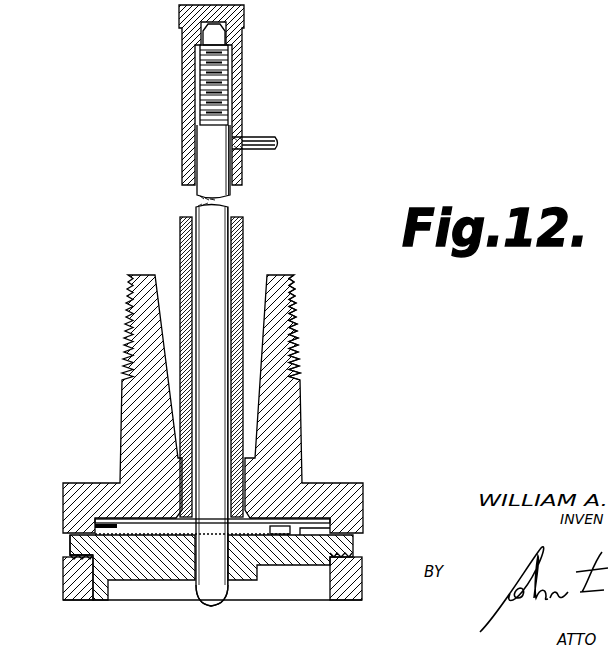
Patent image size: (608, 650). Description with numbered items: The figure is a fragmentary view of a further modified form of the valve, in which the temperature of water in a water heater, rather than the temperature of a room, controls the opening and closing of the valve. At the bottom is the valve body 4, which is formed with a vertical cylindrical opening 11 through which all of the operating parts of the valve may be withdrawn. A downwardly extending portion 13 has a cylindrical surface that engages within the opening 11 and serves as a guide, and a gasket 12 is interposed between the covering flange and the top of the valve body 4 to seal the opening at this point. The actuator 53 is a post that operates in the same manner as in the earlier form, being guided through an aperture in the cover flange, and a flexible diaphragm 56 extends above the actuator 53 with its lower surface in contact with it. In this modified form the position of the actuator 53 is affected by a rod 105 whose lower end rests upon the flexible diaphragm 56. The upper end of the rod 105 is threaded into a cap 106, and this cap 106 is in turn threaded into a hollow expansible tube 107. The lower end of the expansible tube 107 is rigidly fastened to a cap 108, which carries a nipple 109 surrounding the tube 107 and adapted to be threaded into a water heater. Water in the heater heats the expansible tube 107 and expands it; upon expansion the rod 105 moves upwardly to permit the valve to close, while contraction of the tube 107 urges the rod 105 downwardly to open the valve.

The valve body 4 is at (70, 588).
The vertical cylindrical opening 11 is at (322, 586).
The gasket 12 is at (345, 553).
The downwardly extending portion 13 is at (100, 568).
The actuator 53 is at (200, 588).
The flexible diaphragm 56 is at (277, 540).
The rod 105 is at (210, 381).
The cap 106 is at (237, 17).
The hollow expansible tube 107 is at (240, 62).
The cap 108 is at (285, 430).
The nipple 109 is at (282, 330).